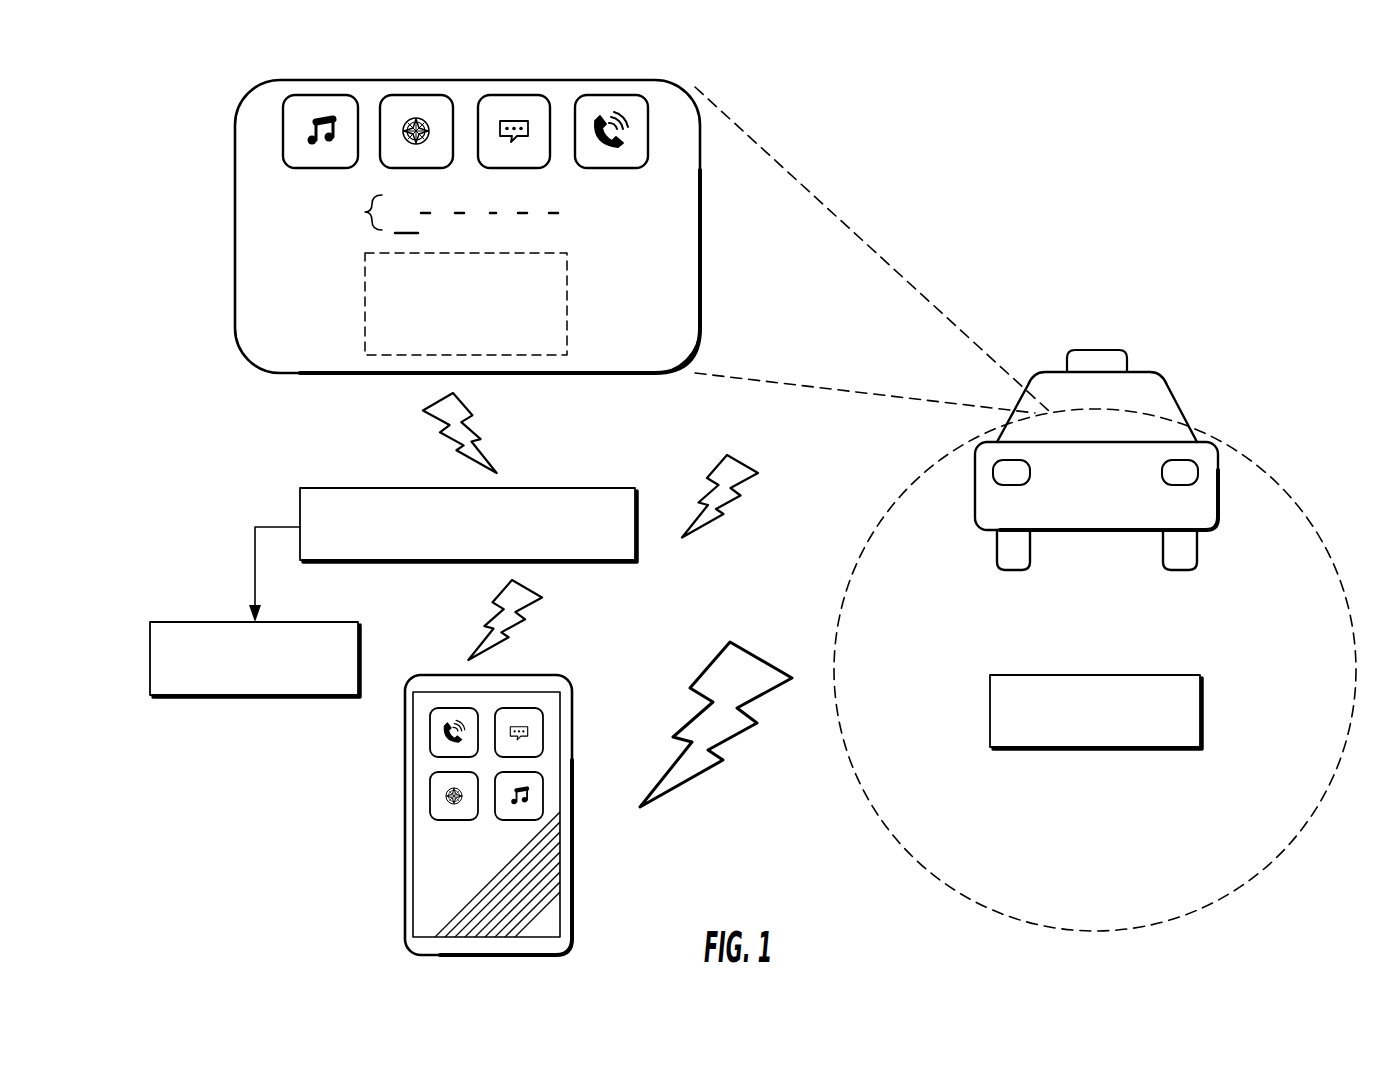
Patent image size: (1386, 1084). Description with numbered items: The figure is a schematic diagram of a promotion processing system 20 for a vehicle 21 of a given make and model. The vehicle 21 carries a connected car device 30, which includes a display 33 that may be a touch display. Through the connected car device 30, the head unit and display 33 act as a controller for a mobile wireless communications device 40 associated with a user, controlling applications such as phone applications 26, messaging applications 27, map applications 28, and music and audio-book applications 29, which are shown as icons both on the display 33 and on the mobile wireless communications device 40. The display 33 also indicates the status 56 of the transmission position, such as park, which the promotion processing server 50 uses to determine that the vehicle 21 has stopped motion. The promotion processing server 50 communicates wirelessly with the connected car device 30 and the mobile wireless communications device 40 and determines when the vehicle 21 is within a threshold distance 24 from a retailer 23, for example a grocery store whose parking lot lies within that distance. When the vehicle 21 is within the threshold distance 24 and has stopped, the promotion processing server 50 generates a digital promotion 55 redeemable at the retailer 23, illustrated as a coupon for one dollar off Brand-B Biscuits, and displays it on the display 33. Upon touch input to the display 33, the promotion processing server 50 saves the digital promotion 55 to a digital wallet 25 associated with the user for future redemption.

The promotion processing system 20 is at (162, 136).
The vehicle 21 is at (1138, 372).
The retailer 23 is at (990, 711).
The threshold distance 24 is at (1250, 458).
The digital wallet 25 is at (185, 622).
The phone applications 26 is at (625, 95).
The messaging applications 27 is at (507, 95).
The map applications 28 is at (427, 95).
The music and audio-book applications 29 is at (320, 95).
The connected car device 30 is at (700, 262).
The display 33 is at (262, 222).
The mobile wireless communications device 40 is at (405, 885).
The promotion processing server 50 is at (300, 507).
The digital promotion 55 is at (365, 297).
The status 56 is at (365, 212).